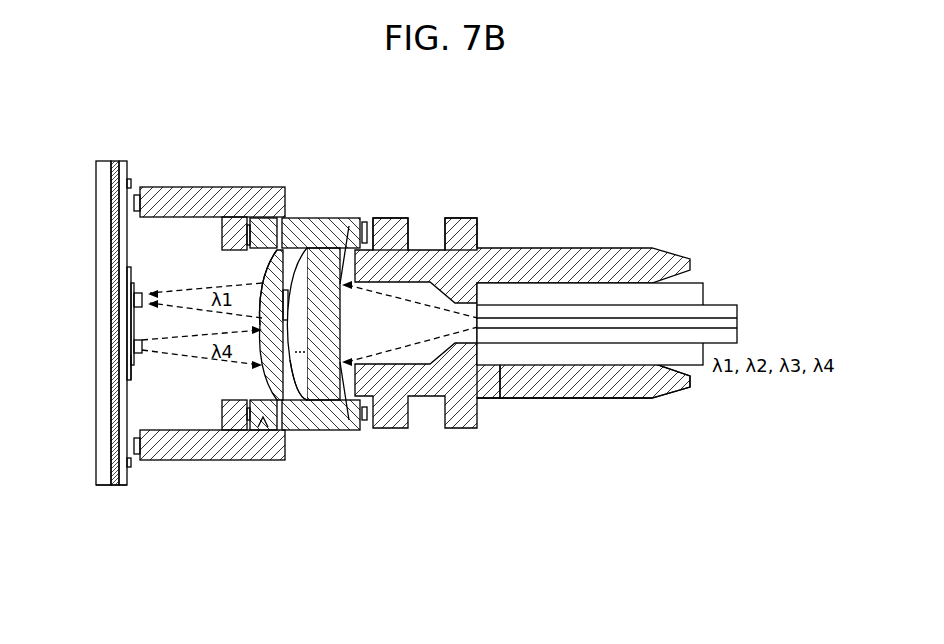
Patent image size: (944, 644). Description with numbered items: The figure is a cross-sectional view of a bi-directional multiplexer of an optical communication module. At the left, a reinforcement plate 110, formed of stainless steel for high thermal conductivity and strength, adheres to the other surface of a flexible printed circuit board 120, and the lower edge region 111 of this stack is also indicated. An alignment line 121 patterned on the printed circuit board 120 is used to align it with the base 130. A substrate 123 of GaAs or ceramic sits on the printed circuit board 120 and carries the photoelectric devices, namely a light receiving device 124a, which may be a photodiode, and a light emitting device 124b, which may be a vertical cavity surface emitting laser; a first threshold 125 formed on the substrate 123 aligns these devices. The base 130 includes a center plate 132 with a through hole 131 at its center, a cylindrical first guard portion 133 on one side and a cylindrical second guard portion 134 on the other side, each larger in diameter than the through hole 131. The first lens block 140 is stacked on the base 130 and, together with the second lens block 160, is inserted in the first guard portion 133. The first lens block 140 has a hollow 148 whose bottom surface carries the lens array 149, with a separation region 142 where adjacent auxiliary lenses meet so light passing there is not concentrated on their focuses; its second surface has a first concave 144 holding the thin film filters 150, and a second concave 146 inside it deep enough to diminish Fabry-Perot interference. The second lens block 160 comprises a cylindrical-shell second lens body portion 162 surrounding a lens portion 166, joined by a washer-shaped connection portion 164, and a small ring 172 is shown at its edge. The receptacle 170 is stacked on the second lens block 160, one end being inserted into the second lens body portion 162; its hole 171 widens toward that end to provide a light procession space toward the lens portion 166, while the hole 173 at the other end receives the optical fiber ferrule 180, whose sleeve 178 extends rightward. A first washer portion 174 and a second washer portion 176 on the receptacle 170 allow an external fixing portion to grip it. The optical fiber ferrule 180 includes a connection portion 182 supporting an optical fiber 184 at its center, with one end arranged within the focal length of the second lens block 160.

The reinforcement plate 110 is at (101, 161).
The board bottom portion 111 is at (112, 486).
The printed circuit board 120 is at (117, 161).
The alignment line 121 is at (127, 183).
The substrate 123 is at (127, 272).
The light receiving device 124a is at (134, 296).
The light emitting device 124b is at (134, 347).
The first threshold 125 is at (131, 362).
The base 130 is at (211, 357).
The through hole 131 is at (225, 388).
The center plate 132 is at (228, 220).
The first guard portion 133 is at (178, 195).
The second guard portion 134 is at (155, 445).
The first lens block 140 is at (224, 306).
The separation region 142 is at (262, 323).
The first concave 144 is at (282, 405).
The second concave 146 is at (275, 440).
The hollow 148 is at (260, 230).
The lens array 149 is at (262, 285).
The thin film filters 150 is at (310, 410).
The second lens block 160 is at (324, 357).
The second lens body portion 162 is at (312, 245).
The connection portion 164 is at (346, 216).
The lens portion 166 is at (338, 270).
The receptacle 170 is at (522, 371).
The hole 171 is at (422, 430).
The snap ring 172 is at (358, 430).
The hole 173 is at (500, 398).
The first washer portion 174 is at (395, 218).
The second washer portion 176 is at (462, 218).
The sleeve 178 is at (575, 398).
The optical fiber ferrule 180 is at (678, 304).
The connection portion 182 is at (710, 292).
The optical fiber 184 is at (647, 317).